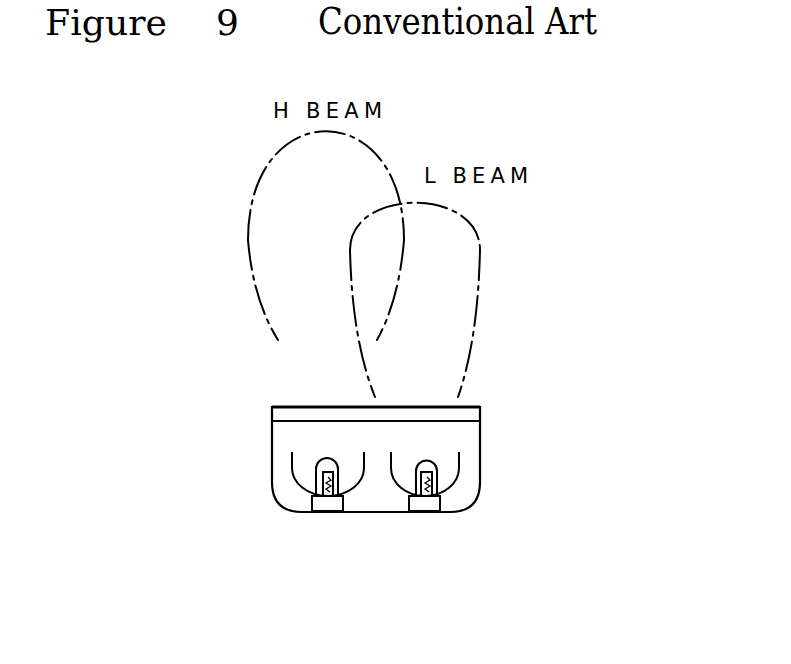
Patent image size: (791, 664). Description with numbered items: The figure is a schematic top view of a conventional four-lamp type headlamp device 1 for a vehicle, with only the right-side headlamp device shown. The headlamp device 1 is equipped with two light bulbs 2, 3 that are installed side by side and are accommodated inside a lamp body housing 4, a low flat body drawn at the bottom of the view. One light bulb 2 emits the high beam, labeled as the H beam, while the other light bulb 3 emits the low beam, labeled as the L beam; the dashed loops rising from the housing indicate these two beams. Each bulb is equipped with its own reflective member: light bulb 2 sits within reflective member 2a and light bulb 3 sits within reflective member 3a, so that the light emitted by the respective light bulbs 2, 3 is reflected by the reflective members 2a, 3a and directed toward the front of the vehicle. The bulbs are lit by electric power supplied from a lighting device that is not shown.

The four-lamp type headlamp device 1 is at (522, 250).
The light bulb 2 is at (316, 479).
The reflective member 2a is at (292, 468).
The light bulb 3 is at (416, 476).
The reflective member 3a is at (463, 455).
The lamp body housing 4 is at (481, 492).